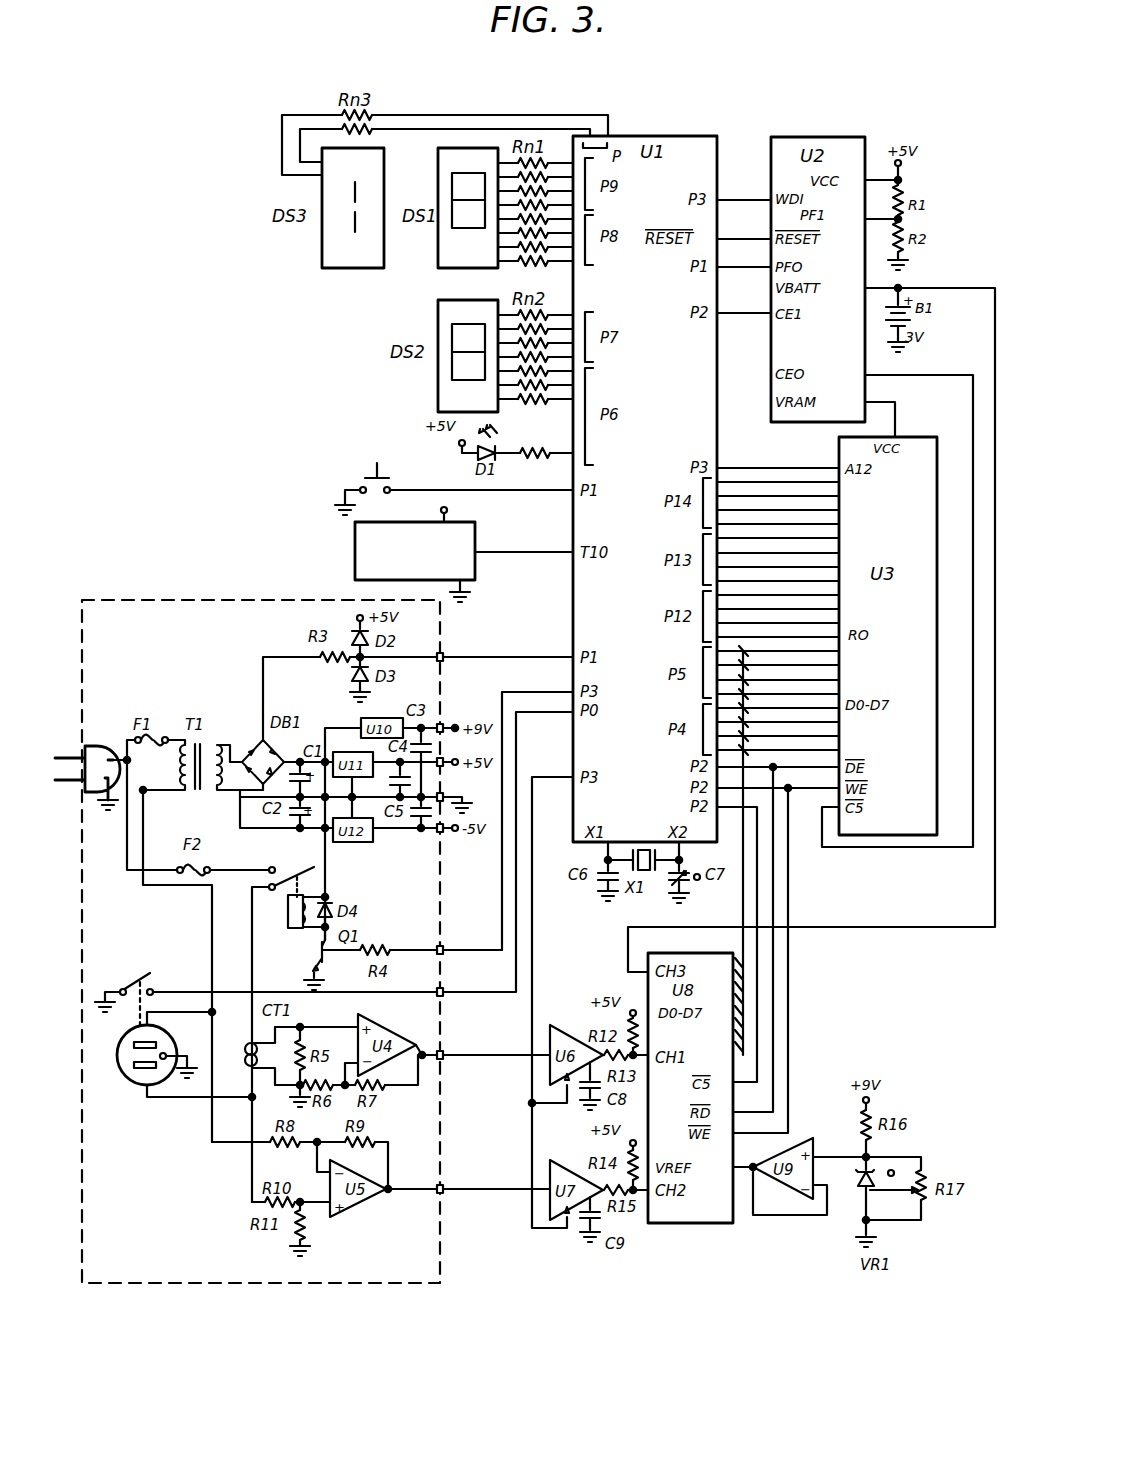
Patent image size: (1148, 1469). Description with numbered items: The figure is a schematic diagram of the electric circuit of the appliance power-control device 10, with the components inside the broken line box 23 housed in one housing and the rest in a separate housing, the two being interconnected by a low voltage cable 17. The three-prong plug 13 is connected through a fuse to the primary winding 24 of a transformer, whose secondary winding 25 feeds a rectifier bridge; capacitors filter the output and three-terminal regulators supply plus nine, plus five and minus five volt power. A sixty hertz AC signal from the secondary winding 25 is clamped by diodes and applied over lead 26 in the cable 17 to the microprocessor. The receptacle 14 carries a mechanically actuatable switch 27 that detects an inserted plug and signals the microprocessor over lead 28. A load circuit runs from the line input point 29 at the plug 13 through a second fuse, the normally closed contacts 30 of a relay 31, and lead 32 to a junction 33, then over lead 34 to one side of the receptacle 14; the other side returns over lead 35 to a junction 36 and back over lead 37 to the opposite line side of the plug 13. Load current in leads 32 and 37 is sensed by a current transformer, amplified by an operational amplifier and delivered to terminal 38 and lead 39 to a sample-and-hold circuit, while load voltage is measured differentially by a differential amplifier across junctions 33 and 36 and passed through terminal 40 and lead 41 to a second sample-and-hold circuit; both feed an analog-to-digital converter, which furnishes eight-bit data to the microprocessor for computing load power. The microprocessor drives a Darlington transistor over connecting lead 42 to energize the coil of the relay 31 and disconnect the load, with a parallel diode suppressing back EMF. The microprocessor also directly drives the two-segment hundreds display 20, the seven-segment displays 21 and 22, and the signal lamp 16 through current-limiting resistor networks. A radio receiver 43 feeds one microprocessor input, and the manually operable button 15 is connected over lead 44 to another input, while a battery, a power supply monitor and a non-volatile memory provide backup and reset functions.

The device 10 is at (206, 150).
The 3-prong plug 13 is at (83, 753).
The receptacle 14 is at (129, 1080).
The manually operable button 15 is at (363, 478).
The signal lamp 16 is at (469, 456).
The low voltage cable 17 is at (491, 1244).
The hundreds position 20 is at (324, 262).
The 7-segment display 21 is at (438, 312).
The 7-segment display 22 is at (448, 262).
The broken line box 23 is at (185, 598).
The primary winding 24 is at (184, 791).
The secondary winding 25 is at (234, 752).
The lead 26 is at (530, 656).
The mechanically actuatable switch 27 is at (143, 983).
The lead 28 is at (474, 985).
The line input point 29 is at (148, 745).
The normally closed contacts 30 is at (313, 869).
The relay 31 is at (290, 902).
The lead 32 is at (252, 956).
The junction 33 is at (250, 1108).
The lead 34 is at (179, 1100).
The lead 35 is at (167, 1010).
The junction 36 is at (214, 1012).
The lead 37 is at (212, 942).
The terminal 38 is at (450, 1057).
The lead 39 is at (494, 1055).
The terminal 40 is at (460, 1189).
The lead 41 is at (496, 1189).
The connecting lead 42 is at (502, 905).
The radio receiver 43 is at (355, 538).
The lead 44 is at (536, 495).